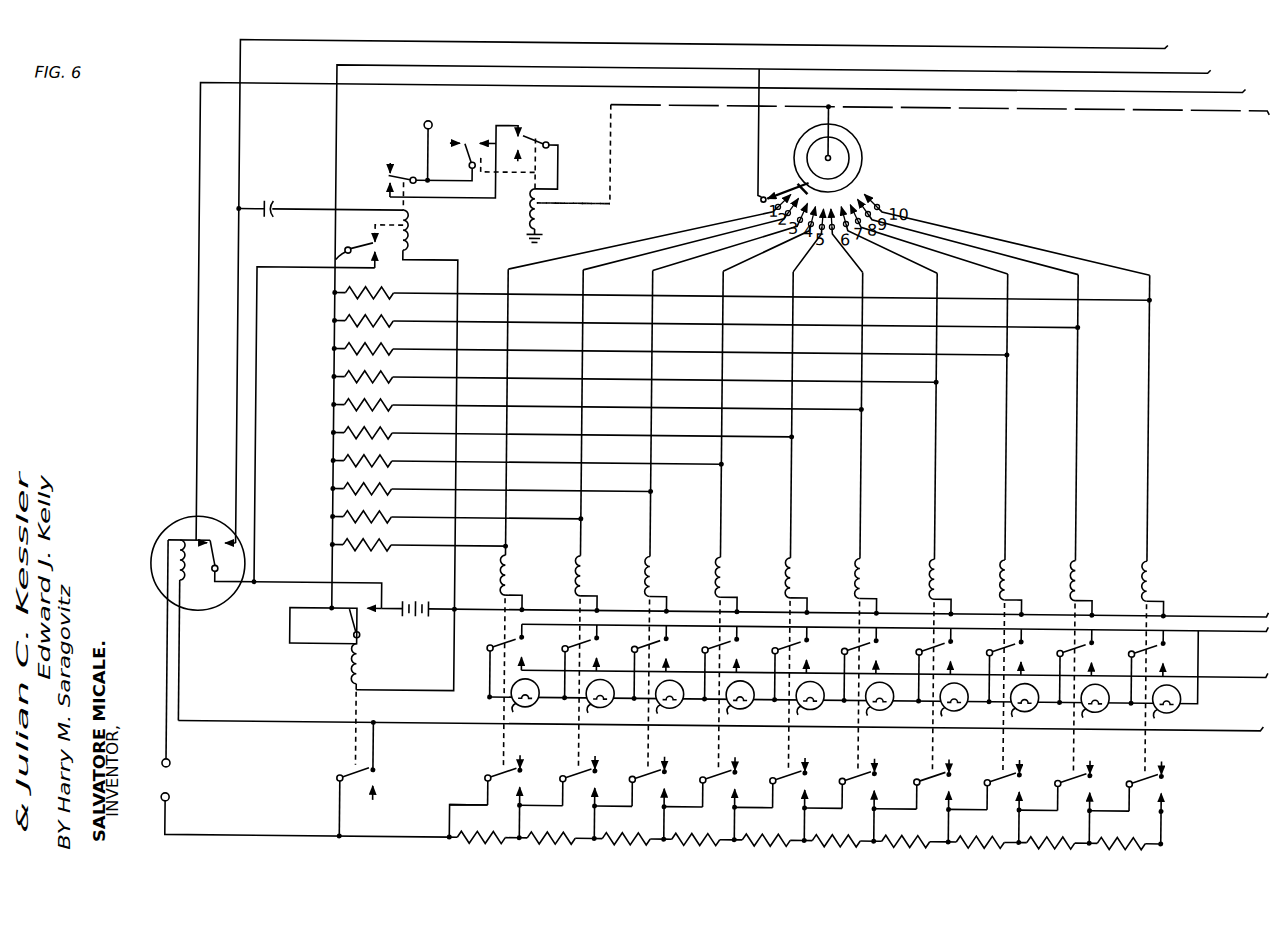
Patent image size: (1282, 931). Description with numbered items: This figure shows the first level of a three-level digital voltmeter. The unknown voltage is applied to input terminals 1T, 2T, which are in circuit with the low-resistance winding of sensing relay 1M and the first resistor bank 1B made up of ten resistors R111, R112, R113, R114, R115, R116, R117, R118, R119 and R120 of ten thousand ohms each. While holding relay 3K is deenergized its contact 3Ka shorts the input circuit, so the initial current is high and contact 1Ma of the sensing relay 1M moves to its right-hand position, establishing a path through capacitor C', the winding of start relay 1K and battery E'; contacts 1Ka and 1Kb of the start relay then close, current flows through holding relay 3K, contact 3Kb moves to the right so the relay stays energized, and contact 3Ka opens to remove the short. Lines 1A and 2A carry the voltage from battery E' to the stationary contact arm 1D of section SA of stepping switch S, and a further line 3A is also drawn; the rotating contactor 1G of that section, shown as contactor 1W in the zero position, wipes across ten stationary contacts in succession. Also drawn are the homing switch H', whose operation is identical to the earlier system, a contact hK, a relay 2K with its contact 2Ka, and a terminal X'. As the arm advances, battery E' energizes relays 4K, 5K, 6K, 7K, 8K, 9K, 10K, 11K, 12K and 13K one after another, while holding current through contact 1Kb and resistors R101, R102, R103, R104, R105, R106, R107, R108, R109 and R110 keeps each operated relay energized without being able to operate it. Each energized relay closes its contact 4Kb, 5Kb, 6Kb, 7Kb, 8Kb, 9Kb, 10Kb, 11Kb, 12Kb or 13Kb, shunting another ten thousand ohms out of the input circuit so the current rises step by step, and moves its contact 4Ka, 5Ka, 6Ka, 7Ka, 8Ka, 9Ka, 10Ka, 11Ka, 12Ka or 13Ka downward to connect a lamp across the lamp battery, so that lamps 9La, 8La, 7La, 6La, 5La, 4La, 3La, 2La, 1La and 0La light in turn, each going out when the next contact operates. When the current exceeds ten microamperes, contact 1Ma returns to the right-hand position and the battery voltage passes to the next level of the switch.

The line 1A is at (197, 131).
The line 2A is at (236, 62).
The conductor 3A is at (333, 158).
The terminal X' is at (426, 138).
The homing switch H' is at (473, 112).
The hold relay contact hK is at (485, 157).
The contact of start relay 1Ka is at (384, 185).
The relay 2K contact a 2Ka is at (520, 137).
The relay 2K is at (530, 207).
The start relay 1K is at (404, 235).
The capacitor C' is at (319, 200).
The contact of start relay 1Kb is at (343, 255).
The rotating contactor 1G is at (809, 137).
The stepping switch S is at (862, 120).
The rotating contactor 1W is at (850, 144).
The stationary contact arm 1D is at (789, 182).
The stepping switch section SA is at (863, 167).
The resistor R101 is at (742, 290).
The resistor R102 is at (706, 317).
The resistor R103 is at (671, 345).
The resistor R104 is at (634, 373).
The resistor R105 is at (597, 400).
The resistor R106 is at (562, 428).
The resistor R107 is at (527, 456).
The resistor R108 is at (491, 483).
The resistor R109 is at (456, 511).
The resistor R110 is at (419, 539).
The sensing relay 1M is at (178, 538).
The sensing relay contact 1Ma is at (219, 557).
The battery E' is at (799, 600).
The contact of holding relay 3Kb is at (325, 626).
The holding relay 3K is at (353, 662).
The contact of holding relay 3Ka is at (342, 778).
The input terminal 1T is at (178, 657).
The input terminal 2T is at (324, 814).
The relay 4K is at (508, 568).
The relay 5K is at (584, 568).
The relay 6K is at (653, 568).
The relay 7K is at (724, 568).
The relay 8K is at (794, 568).
The relay 9K is at (863, 568).
The relay 10K is at (938, 568).
The relay 11K is at (1008, 568).
The relay 12K is at (1078, 568).
The relay 13K is at (1150, 568).
The relay contact 4Ka is at (502, 643).
The relay contact 5Ka is at (578, 643).
The relay contact 6Ka is at (647, 643).
The relay contact 7Ka is at (718, 643).
The relay contact 8Ka is at (788, 643).
The relay contact 9Ka is at (857, 643).
The relay contact 10Ka is at (932, 643).
The relay contact 11Ka is at (1002, 643).
The relay contact 12Ka is at (1072, 643).
The relay contact 13Ka is at (1144, 643).
The relay contact 4Kb is at (498, 775).
The relay contact 5Kb is at (574, 775).
The relay contact 6Kb is at (643, 775).
The relay contact 7Kb is at (714, 775).
The relay contact 8Kb is at (784, 775).
The relay contact 9Kb is at (853, 775).
The relay contact 10Kb is at (928, 775).
The relay contact 11Kb is at (998, 775).
The relay contact 12Kb is at (1068, 775).
The relay contact 13Kb is at (1140, 775).
The lamp 0La is at (531, 700).
The lamp 1La is at (606, 701).
The lamp 2La is at (675, 702).
The lamp 3La is at (746, 702).
The lamp 4La is at (816, 703).
The lamp 5La is at (885, 704).
The lamp 6La is at (960, 704).
The lamp 7La is at (1030, 705).
The lamp 8La is at (1101, 706).
The lamp 9La is at (1172, 706).
The resistor R111 is at (483, 849).
The resistor R112 is at (555, 850).
The resistor R113 is at (628, 850).
The resistor R114 is at (697, 851).
The resistor R115 is at (768, 852).
The resistor R116 is at (838, 852).
The resistor R117 is at (909, 853).
The resistor R118 is at (982, 854).
The resistor R119 is at (1052, 855).
The resistor R120 is at (1124, 855).
The first resistor bank 1B is at (437, 843).